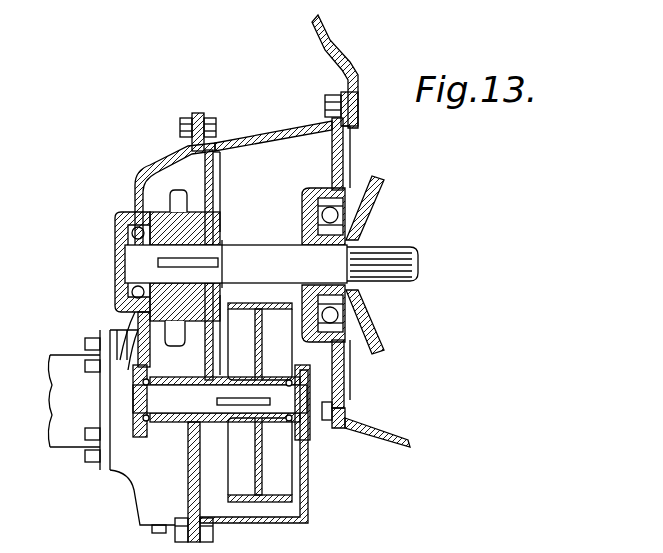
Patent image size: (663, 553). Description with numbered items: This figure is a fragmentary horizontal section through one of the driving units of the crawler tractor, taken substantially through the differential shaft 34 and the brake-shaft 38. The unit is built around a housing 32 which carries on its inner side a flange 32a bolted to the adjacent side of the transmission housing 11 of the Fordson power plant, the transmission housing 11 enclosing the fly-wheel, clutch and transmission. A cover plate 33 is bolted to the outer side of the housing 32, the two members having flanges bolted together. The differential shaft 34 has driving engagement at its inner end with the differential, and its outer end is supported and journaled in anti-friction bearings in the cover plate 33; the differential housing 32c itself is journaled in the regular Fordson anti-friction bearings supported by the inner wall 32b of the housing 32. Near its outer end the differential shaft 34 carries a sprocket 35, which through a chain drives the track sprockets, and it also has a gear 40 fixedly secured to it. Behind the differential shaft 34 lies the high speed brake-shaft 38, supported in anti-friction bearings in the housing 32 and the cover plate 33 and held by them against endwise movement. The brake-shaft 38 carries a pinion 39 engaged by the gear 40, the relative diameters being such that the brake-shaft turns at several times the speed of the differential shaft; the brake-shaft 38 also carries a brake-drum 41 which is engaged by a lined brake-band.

The transmission housing 11 is at (343, 64).
The housing 32 is at (258, 135).
The flange 32a is at (340, 92).
The inner wall 32b is at (334, 164).
The differential housing 32c is at (372, 200).
The cover plate 33 is at (150, 158).
The differential shaft 34 is at (258, 254).
The sprocket 35 is at (176, 195).
The high speed brake-shaft 38 is at (248, 423).
The pinion 39 is at (195, 448).
The gear 40 is at (210, 200).
The brake-drum 41 is at (262, 477).